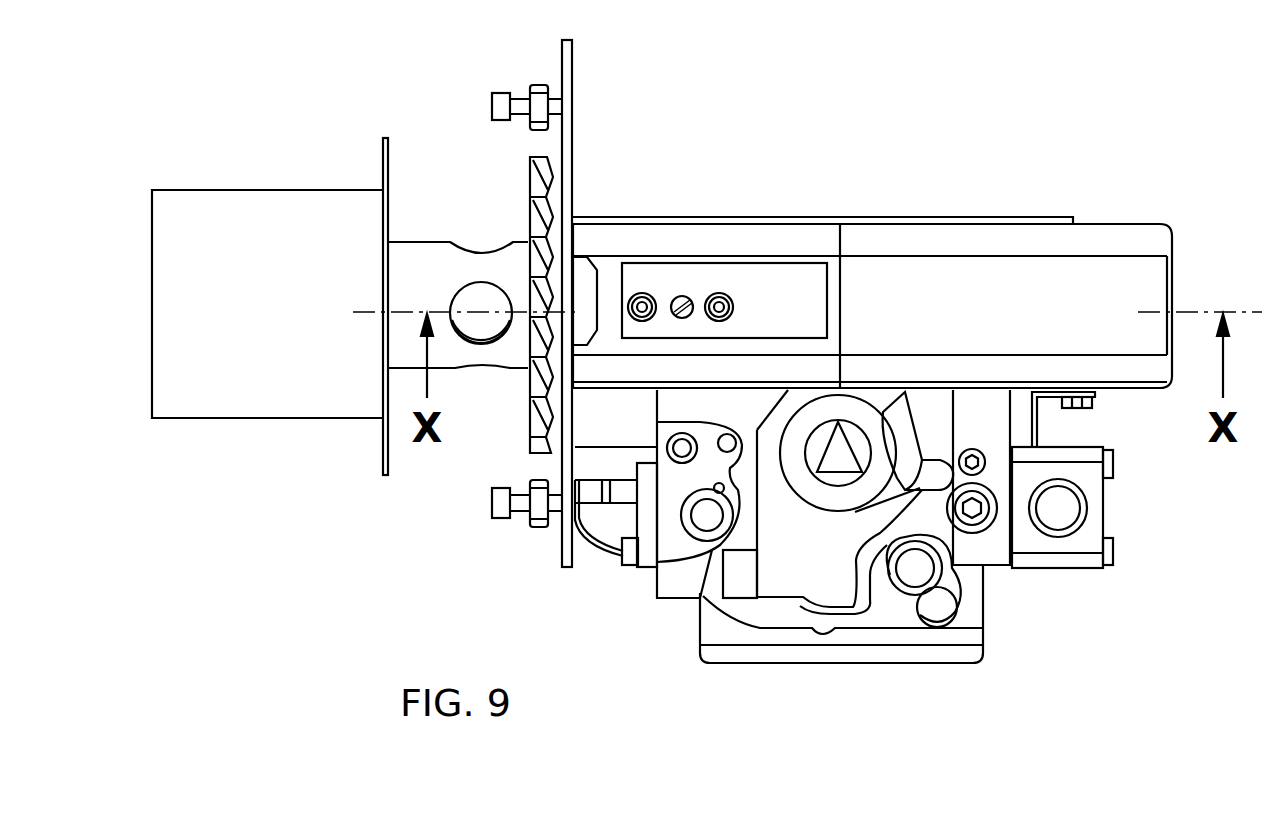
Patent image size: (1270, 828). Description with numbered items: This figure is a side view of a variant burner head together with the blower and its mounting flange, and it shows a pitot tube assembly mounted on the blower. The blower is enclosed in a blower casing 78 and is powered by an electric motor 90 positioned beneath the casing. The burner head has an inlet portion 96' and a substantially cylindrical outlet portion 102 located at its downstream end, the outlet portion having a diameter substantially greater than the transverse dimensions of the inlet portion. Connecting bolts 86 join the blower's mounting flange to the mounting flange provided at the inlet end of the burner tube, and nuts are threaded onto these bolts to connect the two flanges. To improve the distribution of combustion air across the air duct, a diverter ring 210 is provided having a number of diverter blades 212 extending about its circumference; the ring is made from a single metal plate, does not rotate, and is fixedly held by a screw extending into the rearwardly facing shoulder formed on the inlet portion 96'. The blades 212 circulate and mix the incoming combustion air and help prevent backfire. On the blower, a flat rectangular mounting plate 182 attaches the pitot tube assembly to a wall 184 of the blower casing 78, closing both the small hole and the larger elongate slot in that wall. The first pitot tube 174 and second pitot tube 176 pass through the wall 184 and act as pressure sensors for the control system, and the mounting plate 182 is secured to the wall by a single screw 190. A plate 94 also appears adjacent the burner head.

The outlet portion 102 is at (260, 222).
The mounting plate 94 is at (390, 453).
The inlet portion 96' is at (447, 232).
The bolts 86 is at (508, 105).
The diverter ring 210 is at (530, 182).
The diverter blades 212 is at (532, 208).
The blower casing 78 is at (1100, 243).
The wall 184 is at (737, 258).
The mounting plate 182 is at (770, 290).
The second pitot tube 176 is at (642, 295).
The screw 190 is at (682, 296).
The first pitot tube 174 is at (733, 310).
The electric motor 90 is at (975, 630).